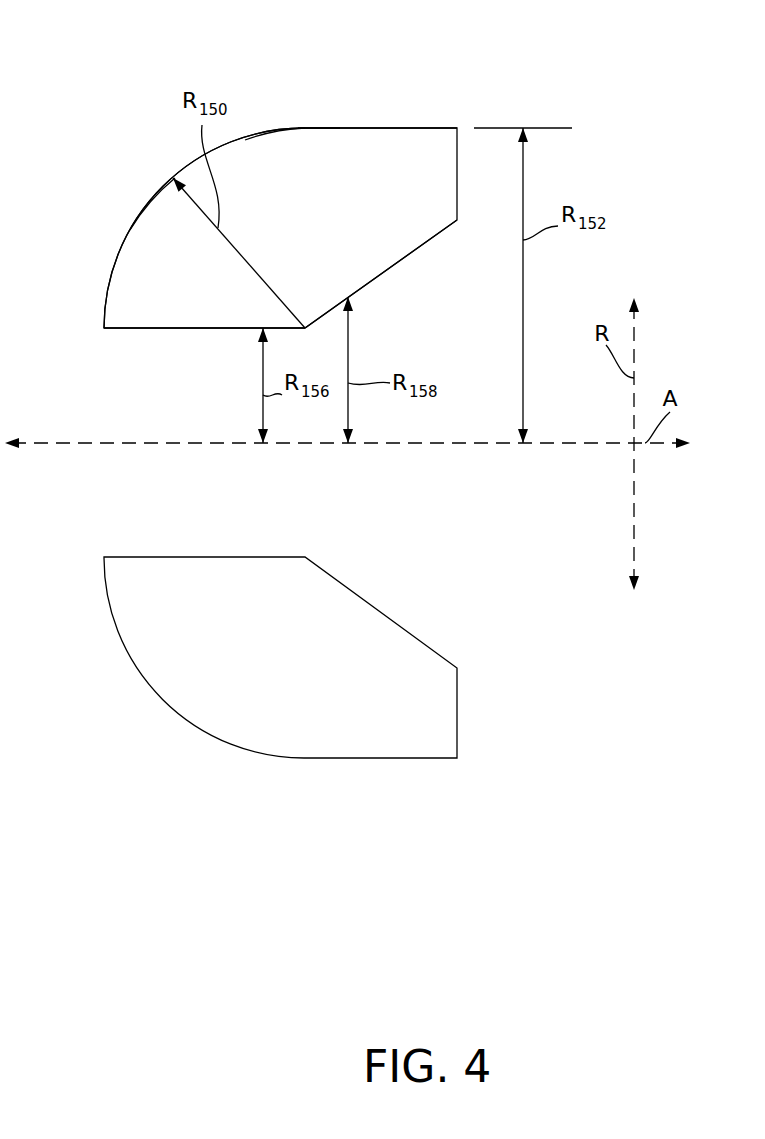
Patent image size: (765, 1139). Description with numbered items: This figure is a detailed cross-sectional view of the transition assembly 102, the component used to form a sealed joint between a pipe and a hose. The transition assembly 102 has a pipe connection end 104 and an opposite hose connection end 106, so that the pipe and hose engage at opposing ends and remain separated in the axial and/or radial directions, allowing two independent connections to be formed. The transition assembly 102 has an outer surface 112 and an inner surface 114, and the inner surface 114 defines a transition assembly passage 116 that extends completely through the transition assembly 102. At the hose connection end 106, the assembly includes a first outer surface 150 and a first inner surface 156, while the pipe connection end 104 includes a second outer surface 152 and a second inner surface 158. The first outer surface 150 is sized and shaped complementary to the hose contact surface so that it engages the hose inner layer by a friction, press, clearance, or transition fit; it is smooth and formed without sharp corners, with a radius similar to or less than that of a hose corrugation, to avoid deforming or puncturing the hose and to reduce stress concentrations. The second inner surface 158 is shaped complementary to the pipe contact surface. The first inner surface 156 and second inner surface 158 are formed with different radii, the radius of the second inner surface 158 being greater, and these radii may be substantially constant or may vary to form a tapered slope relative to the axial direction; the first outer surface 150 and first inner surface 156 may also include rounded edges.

The transition assembly 102 is at (260, 150).
The pipe connection end 104 is at (440, 110).
The hose connection end 106 is at (162, 160).
The outer surface 112 is at (298, 128).
The inner surface 114 is at (215, 330).
The transition assembly passage 116 is at (178, 525).
The first outer surface 150 is at (137, 221).
The second outer surface 152 is at (366, 128).
The first inner surface 156 is at (135, 330).
The second inner surface 158 is at (383, 273).